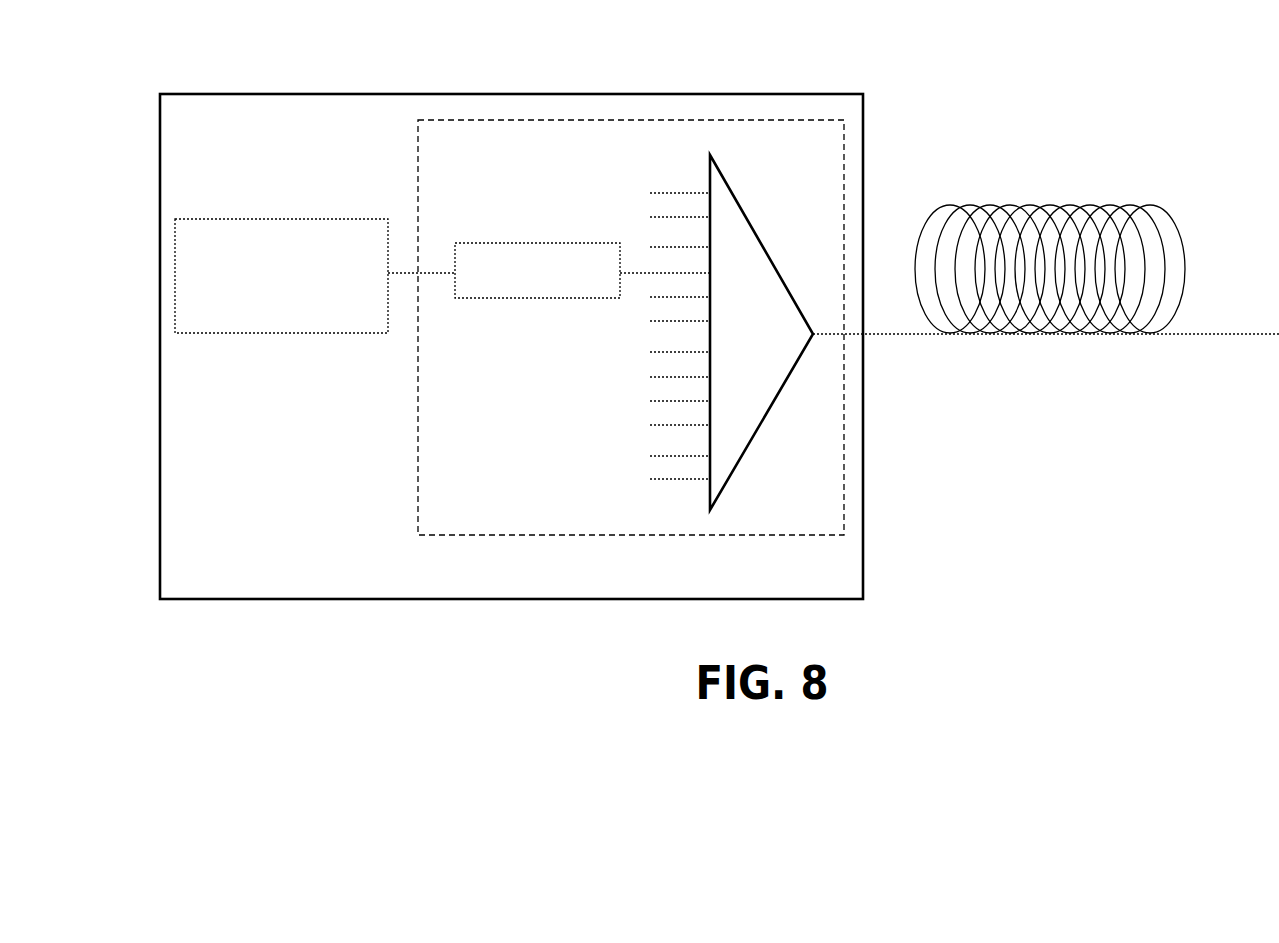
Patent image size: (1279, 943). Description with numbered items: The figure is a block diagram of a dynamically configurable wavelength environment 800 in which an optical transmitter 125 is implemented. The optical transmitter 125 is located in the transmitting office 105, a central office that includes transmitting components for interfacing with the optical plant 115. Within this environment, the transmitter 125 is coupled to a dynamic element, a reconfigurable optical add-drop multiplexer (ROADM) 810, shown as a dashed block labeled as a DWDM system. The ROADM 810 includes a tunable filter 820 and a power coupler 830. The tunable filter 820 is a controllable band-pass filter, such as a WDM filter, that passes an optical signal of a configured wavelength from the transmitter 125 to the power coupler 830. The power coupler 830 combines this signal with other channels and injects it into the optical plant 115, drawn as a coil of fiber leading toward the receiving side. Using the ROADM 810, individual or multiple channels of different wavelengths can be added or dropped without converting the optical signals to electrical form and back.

The dynamically configurable wavelength environment 800 is at (858, 64).
The transmitting office 105 is at (325, 561).
The optical transmitter 125 is at (352, 230).
The reconfigurable optical add-drop multiplexer (ROADM) 810 is at (540, 497).
The tunable filter 820 is at (520, 290).
The power coupler 830 is at (737, 432).
The optical plant 115 is at (1033, 207).